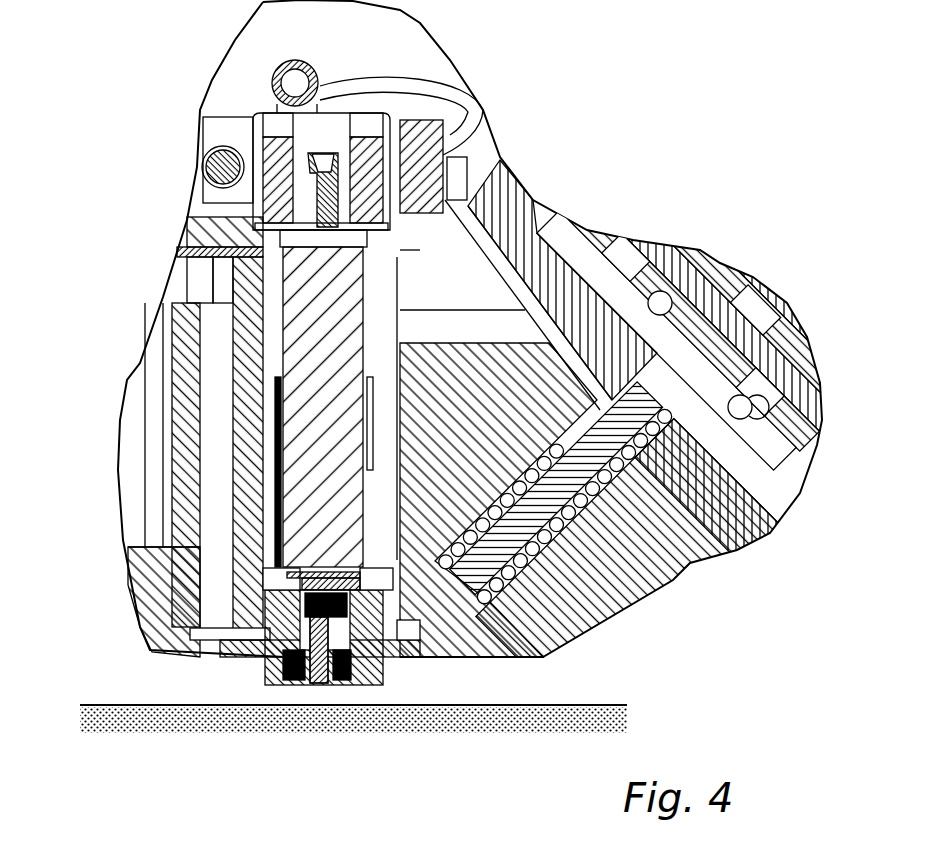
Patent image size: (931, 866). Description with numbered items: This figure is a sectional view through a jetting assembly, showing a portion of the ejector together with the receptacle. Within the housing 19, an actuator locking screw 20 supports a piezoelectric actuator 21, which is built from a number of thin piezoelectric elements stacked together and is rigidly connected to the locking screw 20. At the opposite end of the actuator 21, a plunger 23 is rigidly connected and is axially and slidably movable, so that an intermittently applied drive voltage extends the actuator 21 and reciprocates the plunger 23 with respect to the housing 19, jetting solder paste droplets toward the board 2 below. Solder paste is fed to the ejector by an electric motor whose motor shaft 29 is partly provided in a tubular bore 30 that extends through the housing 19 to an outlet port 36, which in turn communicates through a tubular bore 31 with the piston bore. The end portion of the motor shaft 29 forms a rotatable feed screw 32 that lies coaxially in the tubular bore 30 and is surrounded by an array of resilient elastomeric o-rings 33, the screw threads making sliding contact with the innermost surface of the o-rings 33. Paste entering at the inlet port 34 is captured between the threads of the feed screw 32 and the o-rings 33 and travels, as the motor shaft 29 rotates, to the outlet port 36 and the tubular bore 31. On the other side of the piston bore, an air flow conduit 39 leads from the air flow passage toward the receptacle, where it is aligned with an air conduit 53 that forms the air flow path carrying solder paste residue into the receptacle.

The board 2 is at (612, 718).
The housing 19 is at (633, 602).
The actuator locking screw 20 is at (270, 203).
The piezoelectric actuator 21 is at (300, 313).
The plunger 23 is at (280, 603).
The motor shaft 29 is at (715, 282).
The tubular bore 30 is at (670, 580).
The tubular bore 31 is at (370, 633).
The rotatable feed screw 32 is at (593, 622).
The o-rings 33 is at (567, 642).
The inlet port 34 is at (637, 290).
The outlet port 36 is at (423, 640).
The air flow conduit 39 is at (300, 602).
The air conduit 53 is at (213, 444).